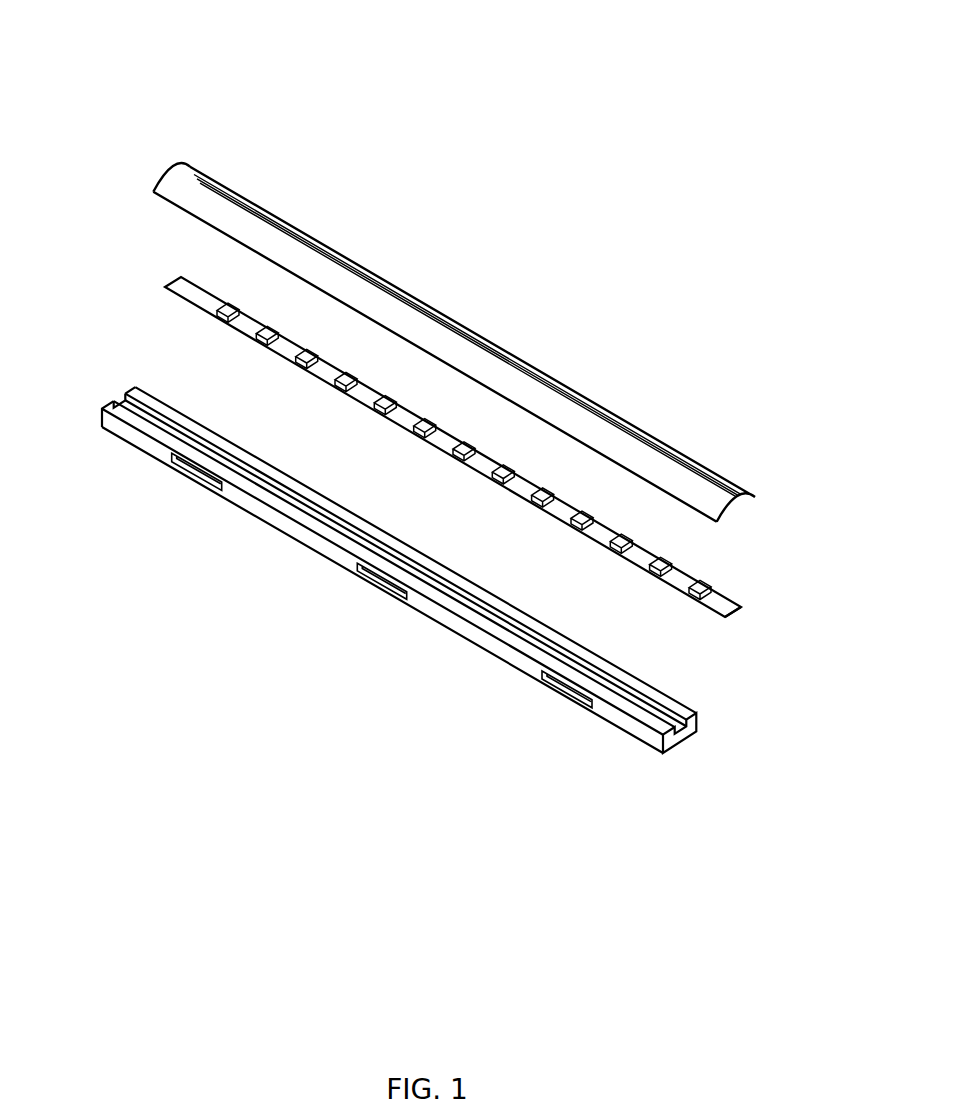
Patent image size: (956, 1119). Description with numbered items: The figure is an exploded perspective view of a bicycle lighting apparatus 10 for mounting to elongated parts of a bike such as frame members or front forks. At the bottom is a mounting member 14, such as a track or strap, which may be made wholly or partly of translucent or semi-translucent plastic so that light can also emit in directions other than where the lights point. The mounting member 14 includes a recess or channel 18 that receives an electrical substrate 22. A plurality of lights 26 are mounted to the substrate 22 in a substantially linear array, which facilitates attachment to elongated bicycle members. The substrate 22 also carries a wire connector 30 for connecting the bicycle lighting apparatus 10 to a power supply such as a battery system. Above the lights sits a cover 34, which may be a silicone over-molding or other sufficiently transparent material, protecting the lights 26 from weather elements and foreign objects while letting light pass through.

The bicycle lighting apparatus 10 is at (282, 58).
The mounting member 14 is at (323, 543).
The channel 18 is at (680, 727).
The electrical substrate 22 is at (176, 289).
The lights 26 is at (373, 403).
The wire connector 30 is at (723, 605).
The cover 34 is at (172, 182).